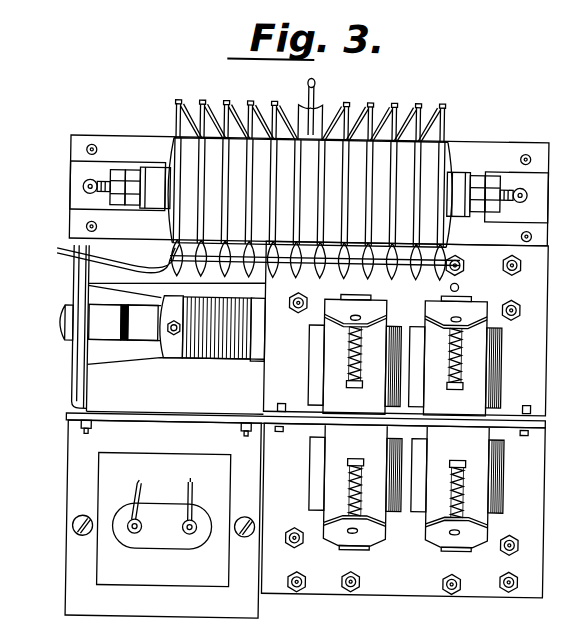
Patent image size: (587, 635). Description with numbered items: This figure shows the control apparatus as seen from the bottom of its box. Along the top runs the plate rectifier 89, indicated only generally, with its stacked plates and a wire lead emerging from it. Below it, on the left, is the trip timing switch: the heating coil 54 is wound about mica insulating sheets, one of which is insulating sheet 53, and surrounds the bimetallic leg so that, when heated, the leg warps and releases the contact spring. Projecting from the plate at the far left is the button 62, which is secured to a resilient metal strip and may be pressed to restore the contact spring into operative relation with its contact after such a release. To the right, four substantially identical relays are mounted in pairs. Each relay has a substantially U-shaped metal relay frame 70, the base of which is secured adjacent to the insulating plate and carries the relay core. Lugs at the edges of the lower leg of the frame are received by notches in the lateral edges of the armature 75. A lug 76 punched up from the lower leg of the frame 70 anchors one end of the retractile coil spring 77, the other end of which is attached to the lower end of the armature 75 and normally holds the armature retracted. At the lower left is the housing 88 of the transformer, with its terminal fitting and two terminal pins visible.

The insulating sheet 53 is at (160, 360).
The heating coil 54 is at (232, 356).
The button 62 is at (56, 326).
The relay frame 70 is at (312, 378).
The armature 75 is at (336, 312).
The lug 76 is at (340, 445).
The retractile coil spring 77 is at (348, 345).
The transformer housing 88 is at (116, 490).
The plate rectifier 89 is at (245, 109).